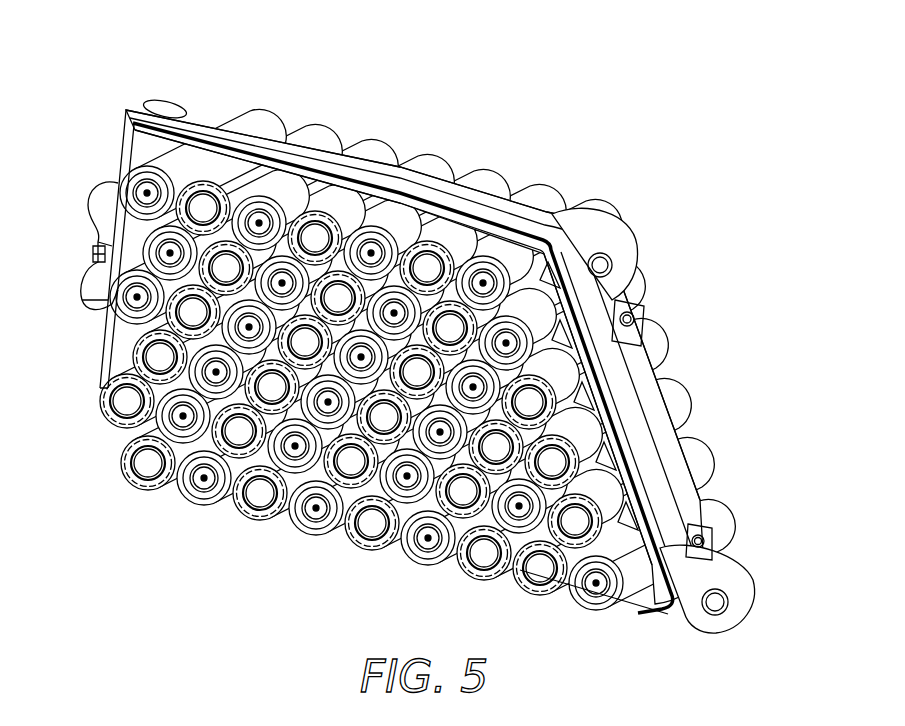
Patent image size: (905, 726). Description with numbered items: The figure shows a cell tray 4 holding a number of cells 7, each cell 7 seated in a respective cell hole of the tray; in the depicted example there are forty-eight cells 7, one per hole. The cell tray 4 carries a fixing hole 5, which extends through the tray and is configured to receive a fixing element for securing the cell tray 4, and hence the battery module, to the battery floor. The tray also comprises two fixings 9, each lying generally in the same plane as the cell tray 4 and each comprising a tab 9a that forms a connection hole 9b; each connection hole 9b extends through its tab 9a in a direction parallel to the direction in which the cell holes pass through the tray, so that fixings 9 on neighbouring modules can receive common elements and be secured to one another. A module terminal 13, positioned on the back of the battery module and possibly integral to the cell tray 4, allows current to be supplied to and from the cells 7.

The cell tray 4 is at (402, 328).
The fixing hole 5 is at (170, 106).
The cell 7 is at (259, 220).
The fixing 9 is at (684, 420).
The tab 9a is at (640, 242).
The connection hole 9b is at (606, 266).
The module terminal 13 is at (100, 200).